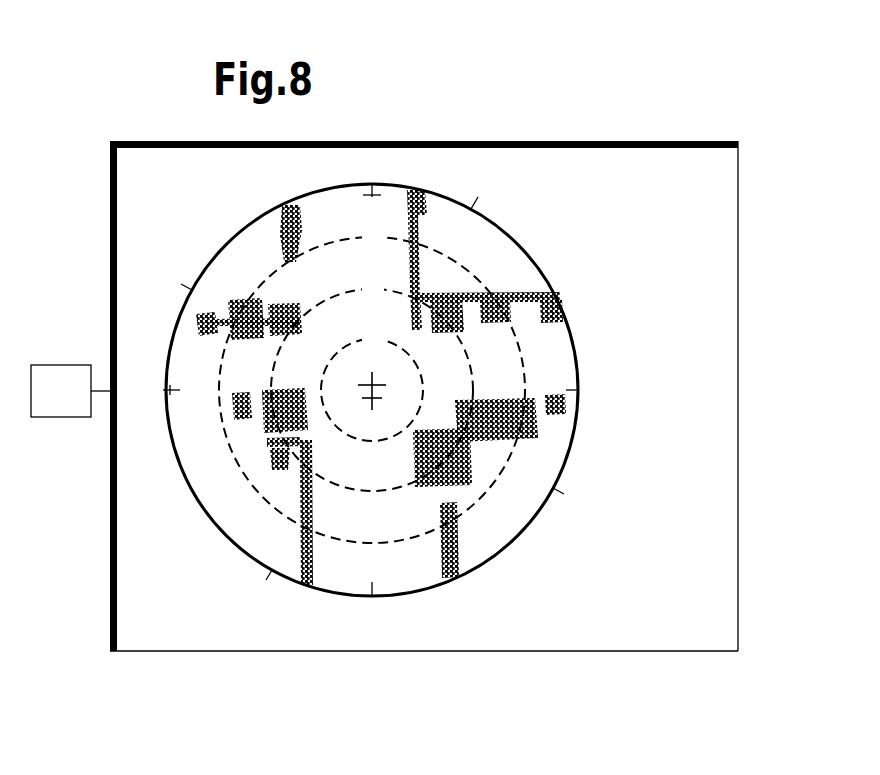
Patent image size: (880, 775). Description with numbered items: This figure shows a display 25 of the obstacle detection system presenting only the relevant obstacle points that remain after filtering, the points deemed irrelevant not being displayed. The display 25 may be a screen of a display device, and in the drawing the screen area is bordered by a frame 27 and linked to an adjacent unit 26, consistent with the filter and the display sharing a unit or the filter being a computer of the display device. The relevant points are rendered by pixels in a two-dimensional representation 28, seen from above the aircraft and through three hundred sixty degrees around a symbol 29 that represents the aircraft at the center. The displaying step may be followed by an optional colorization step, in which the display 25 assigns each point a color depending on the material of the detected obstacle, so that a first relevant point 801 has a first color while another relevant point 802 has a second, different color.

The display 25 is at (575, 587).
The external unit connected to display 26 is at (78, 406).
The display device frame 27 is at (110, 494).
The two-dimensional representation 28 is at (199, 542).
The symbol representing the aircraft 29 is at (384, 394).
The first relevant point 801 is at (430, 267).
The another relevant point 802 is at (557, 313).